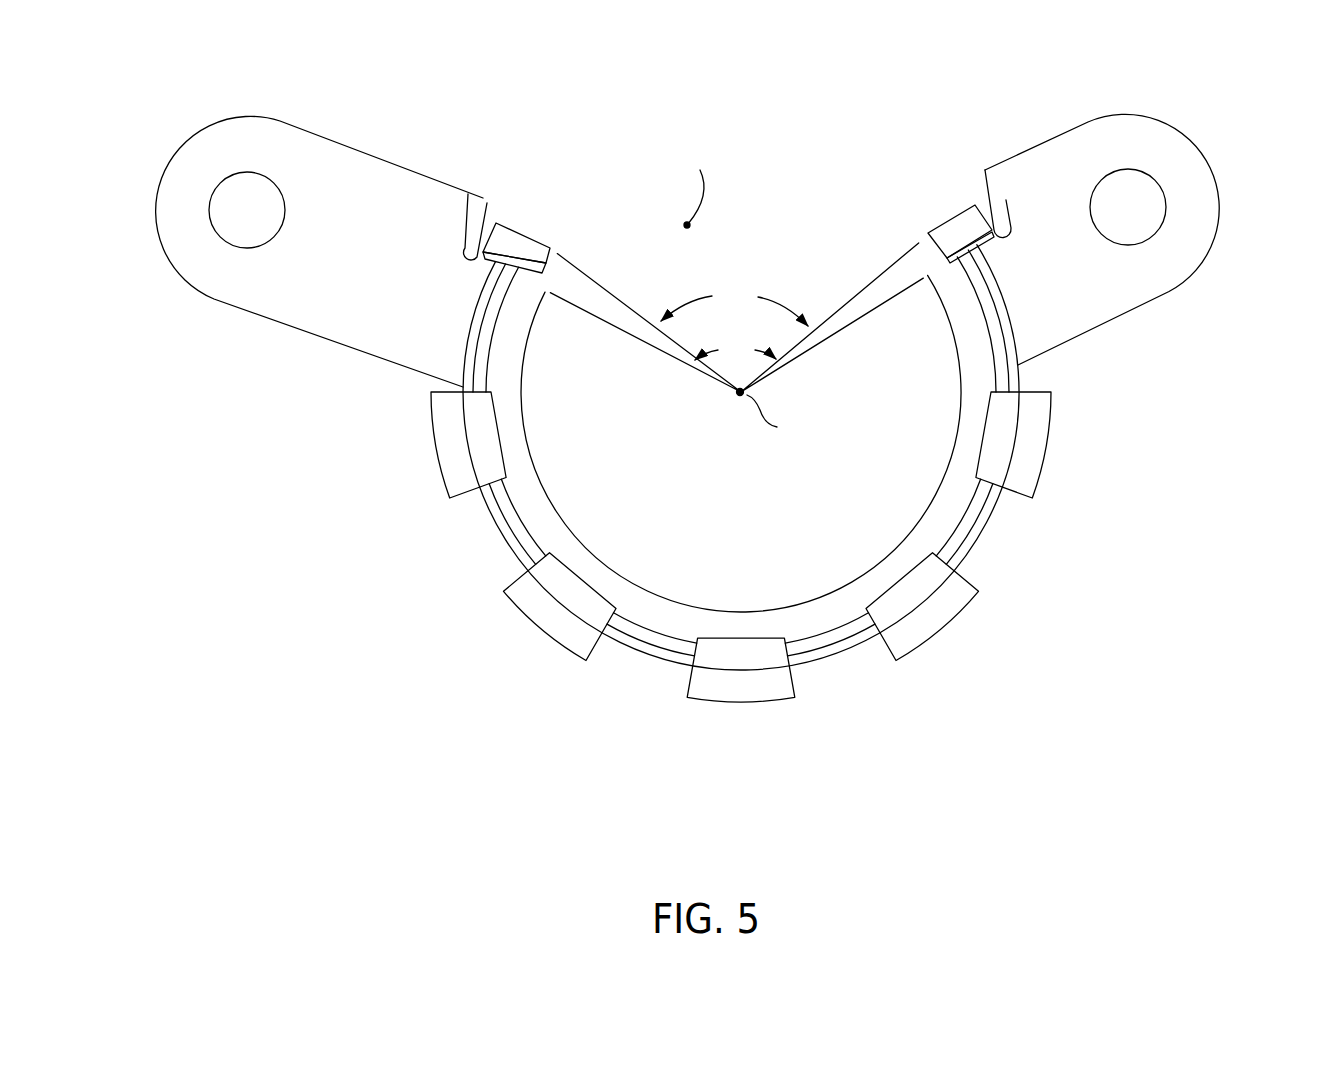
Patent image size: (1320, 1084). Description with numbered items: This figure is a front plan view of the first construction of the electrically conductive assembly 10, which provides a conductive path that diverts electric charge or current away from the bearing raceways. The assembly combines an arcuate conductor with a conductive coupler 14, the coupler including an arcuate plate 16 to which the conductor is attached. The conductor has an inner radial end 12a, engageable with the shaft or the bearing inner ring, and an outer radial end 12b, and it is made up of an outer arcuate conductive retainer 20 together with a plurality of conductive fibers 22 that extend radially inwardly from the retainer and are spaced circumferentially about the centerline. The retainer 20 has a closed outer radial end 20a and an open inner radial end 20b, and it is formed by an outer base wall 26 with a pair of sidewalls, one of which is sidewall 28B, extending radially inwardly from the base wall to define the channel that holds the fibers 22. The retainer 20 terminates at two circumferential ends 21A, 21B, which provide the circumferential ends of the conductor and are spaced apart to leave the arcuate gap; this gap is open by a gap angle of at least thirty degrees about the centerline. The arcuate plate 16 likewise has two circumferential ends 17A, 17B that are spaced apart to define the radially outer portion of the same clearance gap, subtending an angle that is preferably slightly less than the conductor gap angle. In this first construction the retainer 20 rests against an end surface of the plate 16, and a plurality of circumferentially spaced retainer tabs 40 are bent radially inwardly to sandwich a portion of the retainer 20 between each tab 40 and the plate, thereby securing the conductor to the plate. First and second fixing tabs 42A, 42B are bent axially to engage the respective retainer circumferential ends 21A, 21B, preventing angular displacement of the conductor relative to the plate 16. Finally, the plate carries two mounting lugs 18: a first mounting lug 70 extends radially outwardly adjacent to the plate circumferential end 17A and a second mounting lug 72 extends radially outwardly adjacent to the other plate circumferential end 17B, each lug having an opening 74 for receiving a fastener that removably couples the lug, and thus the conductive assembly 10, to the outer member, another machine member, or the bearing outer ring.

The electrically conductive assembly 10 is at (320, 550).
The inner radial end 12a is at (599, 545).
The outer radial end 12b is at (638, 668).
The conductive coupler 14 is at (472, 163).
The arcuate plate 16 is at (1024, 376).
The circumferential end 17A is at (528, 235).
The circumferential end 17B is at (955, 212).
The mounting lug 18 is at (281, 318).
The arcuate conductive retainer 20 is at (853, 665).
The closed outer radial end 20a is at (974, 548).
The open inner radial end 20b is at (971, 500).
The circumferential end 21A is at (512, 272).
The circumferential end 21B is at (968, 243).
The conductive fibers 22 is at (518, 383).
The outer base wall 26 is at (498, 538).
The sidewall 28B is at (515, 532).
The retainer tab 40 is at (437, 447).
The first fixing tab 42A is at (510, 232).
The second fixing tab 42B is at (933, 232).
The first mounting lug 70 is at (272, 135).
The second mounting lug 72 is at (1068, 133).
The opening 74 is at (275, 209).